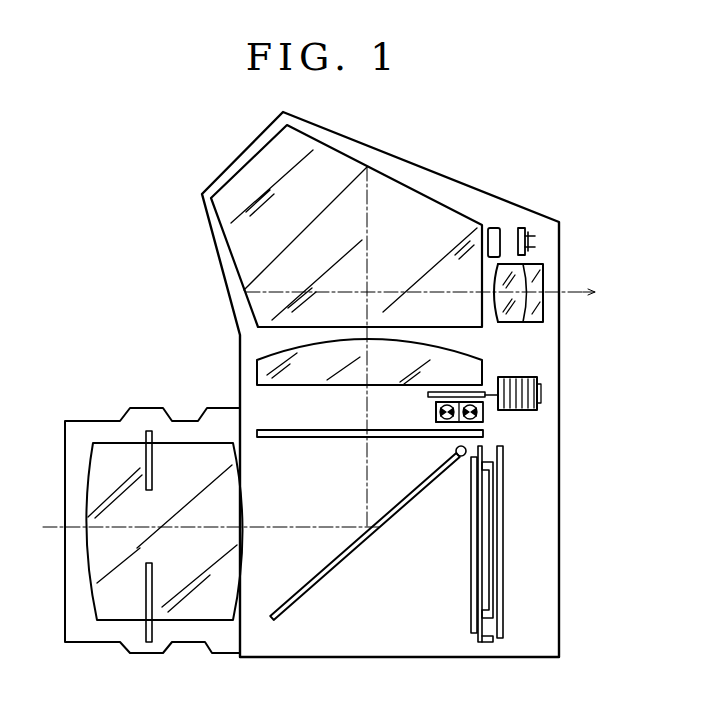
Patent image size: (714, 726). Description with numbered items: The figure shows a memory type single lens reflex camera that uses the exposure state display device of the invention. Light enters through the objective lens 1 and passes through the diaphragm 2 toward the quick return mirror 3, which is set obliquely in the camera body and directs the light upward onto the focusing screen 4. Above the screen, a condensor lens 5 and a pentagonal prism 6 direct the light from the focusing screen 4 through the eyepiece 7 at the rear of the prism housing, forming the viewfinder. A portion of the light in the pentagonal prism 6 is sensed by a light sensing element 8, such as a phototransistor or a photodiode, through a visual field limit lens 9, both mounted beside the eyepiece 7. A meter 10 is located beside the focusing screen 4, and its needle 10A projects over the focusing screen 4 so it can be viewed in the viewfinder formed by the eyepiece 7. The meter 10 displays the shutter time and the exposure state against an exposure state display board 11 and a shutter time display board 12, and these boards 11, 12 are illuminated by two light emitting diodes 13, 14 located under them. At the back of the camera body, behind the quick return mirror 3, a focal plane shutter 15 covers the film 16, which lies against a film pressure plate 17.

The objective lens 1 is at (112, 607).
The diaphragm 2 is at (149, 648).
The quick return mirror 3 is at (292, 603).
The focusing screen 4 is at (313, 438).
The condensor lens 5 is at (313, 385).
The pentagonal prism 6 is at (245, 254).
The eyepiece 7 is at (540, 268).
The light sensing element 8 is at (524, 229).
The visual field limit lens 9 is at (494, 228).
The meter 10 is at (541, 393).
The needle 10A is at (488, 391).
The exposure state display board 11 is at (483, 405).
The shutter time display board 12 is at (436, 404).
The light emitting diode 13 is at (484, 420).
The light emitting diode 14 is at (437, 422).
The focal plane shutter 15 is at (471, 590).
The film 16 is at (488, 552).
The film pressure plate 17 is at (503, 580).